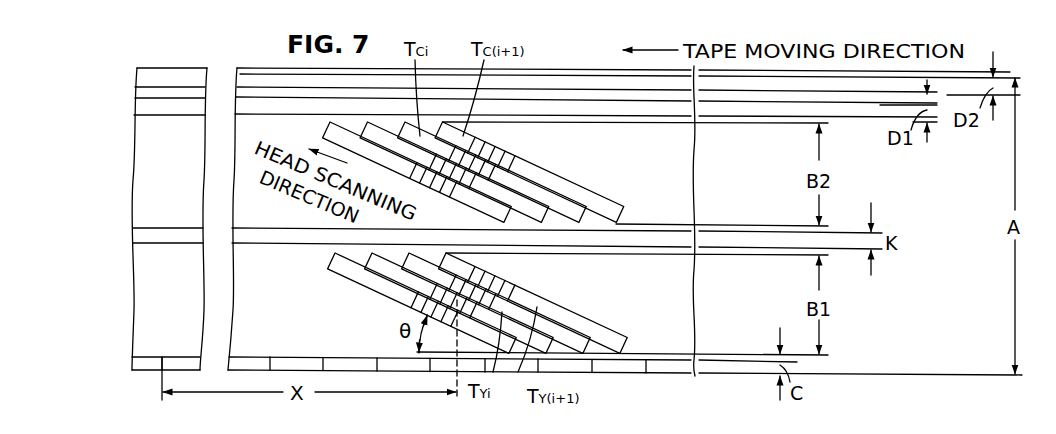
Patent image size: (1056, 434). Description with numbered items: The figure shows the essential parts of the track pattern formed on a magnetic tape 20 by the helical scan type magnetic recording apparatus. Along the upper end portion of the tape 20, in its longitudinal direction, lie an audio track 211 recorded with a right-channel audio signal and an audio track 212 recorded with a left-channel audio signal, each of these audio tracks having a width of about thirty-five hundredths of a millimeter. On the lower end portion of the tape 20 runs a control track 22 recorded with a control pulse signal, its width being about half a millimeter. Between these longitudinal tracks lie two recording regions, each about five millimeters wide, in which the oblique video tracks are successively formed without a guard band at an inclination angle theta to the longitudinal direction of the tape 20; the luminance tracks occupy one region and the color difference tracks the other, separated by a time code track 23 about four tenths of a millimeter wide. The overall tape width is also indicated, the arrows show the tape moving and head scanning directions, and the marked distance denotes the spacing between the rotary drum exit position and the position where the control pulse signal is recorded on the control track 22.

The magnetic tape 20 is at (138, 155).
The audio track 211 is at (138, 107).
The audio track 212 is at (140, 82).
The control track 22 is at (137, 363).
The time code track 23 is at (140, 238).